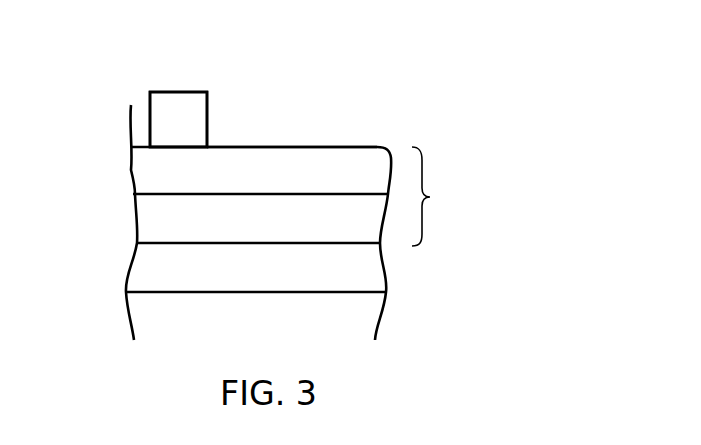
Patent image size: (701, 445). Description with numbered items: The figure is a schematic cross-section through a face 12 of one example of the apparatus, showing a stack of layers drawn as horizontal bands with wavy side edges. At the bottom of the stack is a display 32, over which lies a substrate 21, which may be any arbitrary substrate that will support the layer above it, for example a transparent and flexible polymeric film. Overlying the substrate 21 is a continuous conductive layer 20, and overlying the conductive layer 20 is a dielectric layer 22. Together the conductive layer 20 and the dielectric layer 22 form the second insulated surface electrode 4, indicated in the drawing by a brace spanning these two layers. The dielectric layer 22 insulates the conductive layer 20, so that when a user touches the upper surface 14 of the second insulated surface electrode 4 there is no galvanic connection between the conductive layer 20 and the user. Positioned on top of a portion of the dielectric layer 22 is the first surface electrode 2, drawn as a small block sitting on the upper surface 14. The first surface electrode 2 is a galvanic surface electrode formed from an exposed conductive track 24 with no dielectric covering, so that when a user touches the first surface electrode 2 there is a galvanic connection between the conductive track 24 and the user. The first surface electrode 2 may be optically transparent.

The first surface electrode 2 is at (191, 91).
The second insulated surface electrode 4 is at (436, 196).
The face 12 is at (403, 74).
The upper surface 14 is at (333, 136).
The conductive layer 20 is at (258, 223).
The substrate 21 is at (256, 271).
The dielectric layer 22 is at (259, 170).
The conductive track 24 is at (178, 119).
The display 32 is at (203, 319).